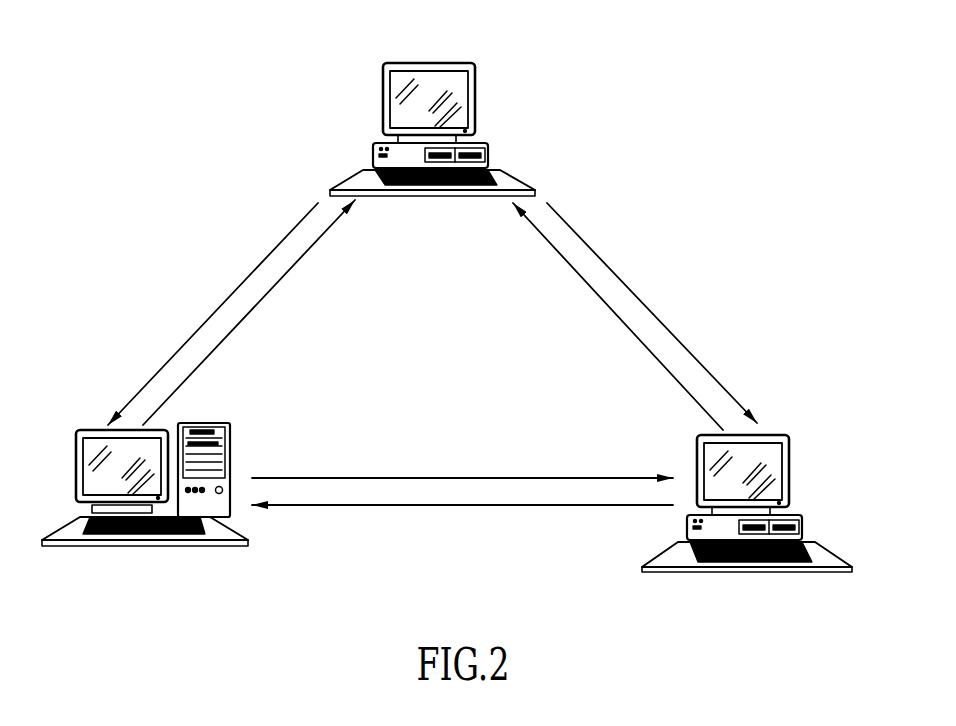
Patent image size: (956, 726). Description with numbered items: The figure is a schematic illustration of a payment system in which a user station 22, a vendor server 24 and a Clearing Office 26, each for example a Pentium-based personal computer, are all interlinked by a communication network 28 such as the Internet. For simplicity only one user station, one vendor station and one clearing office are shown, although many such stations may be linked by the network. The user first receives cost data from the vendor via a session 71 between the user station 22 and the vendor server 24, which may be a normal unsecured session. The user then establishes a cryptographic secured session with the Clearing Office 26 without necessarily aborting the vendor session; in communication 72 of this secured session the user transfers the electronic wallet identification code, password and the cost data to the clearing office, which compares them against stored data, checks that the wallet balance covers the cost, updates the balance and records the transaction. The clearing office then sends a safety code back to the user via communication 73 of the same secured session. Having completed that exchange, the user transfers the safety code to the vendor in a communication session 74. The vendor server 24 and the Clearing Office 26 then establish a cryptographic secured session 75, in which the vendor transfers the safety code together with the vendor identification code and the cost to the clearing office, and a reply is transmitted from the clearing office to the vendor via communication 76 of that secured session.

The user station 22 is at (76, 473).
The vendor server 24 is at (476, 95).
The Clearing Office 26 is at (793, 466).
The communication network 28 is at (748, 226).
The session 71 is at (207, 322).
The communication 72 is at (485, 478).
The communication 73 is at (452, 505).
The communication session 74 is at (238, 323).
The cryptographic secured session 75 is at (683, 347).
The communication 76 is at (572, 270).